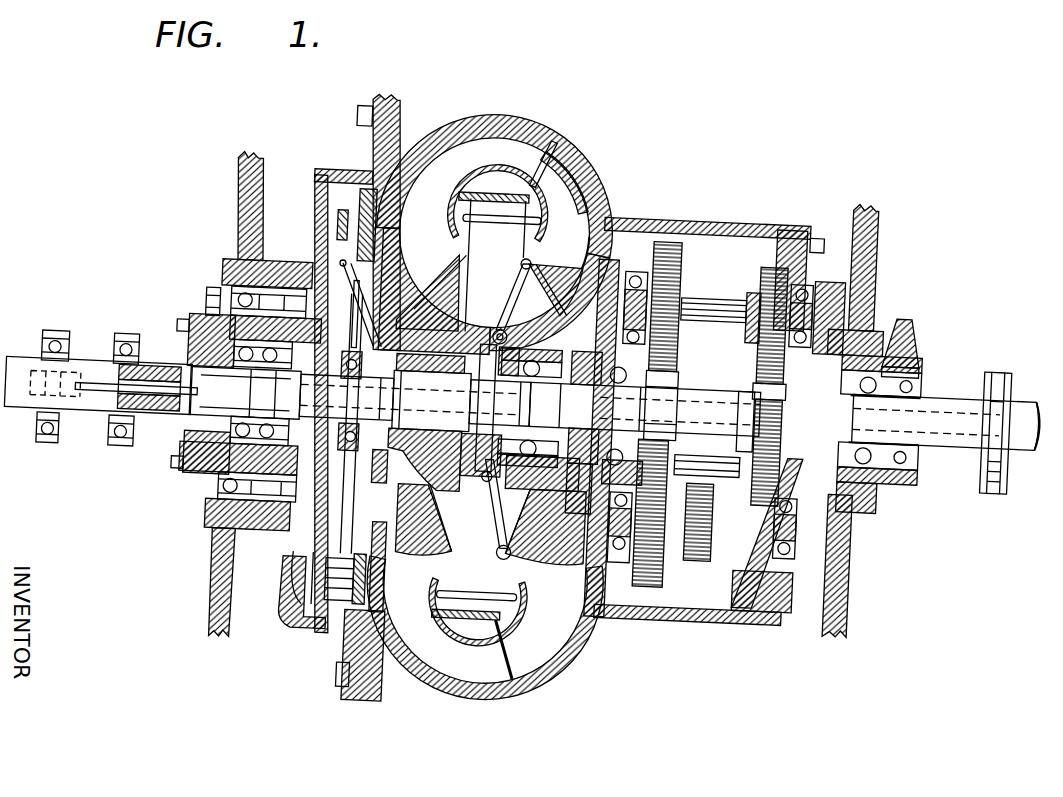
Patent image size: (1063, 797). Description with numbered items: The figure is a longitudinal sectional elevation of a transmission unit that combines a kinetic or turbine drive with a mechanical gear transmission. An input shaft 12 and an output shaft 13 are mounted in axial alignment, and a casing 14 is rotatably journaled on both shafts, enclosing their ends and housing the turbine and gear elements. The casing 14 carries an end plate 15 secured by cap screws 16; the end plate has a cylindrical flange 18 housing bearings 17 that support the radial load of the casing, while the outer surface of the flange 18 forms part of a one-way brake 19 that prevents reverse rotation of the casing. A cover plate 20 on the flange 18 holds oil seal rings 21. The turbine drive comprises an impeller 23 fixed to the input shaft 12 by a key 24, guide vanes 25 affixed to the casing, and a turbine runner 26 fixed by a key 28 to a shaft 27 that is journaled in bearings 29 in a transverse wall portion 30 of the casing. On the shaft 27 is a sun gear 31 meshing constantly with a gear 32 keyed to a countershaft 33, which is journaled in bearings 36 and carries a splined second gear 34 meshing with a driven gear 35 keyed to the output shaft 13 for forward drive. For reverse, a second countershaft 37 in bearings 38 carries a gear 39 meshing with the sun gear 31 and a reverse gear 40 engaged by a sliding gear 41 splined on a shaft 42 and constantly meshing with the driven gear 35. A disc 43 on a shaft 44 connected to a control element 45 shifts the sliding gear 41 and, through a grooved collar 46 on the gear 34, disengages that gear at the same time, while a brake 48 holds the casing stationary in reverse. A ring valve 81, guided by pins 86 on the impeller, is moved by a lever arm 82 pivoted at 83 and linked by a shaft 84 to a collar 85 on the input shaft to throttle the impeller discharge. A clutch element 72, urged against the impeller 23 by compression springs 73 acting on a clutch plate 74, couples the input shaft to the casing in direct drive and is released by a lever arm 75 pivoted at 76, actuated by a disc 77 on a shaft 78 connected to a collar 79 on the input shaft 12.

The input shaft 12 is at (30, 378).
The output shaft 13 is at (1030, 437).
The casing 14 is at (617, 214).
The end plate 15 is at (365, 114).
The cap screws 16 is at (350, 122).
The bearings 17 is at (232, 458).
The cylindrical flange 18 is at (208, 324).
The one-way brake 19 is at (272, 284).
The cover plate 20 is at (200, 324).
The oil seal rings 21 is at (184, 368).
The impeller 23 is at (414, 202).
The key 24 is at (424, 372).
The guide vanes 25 is at (460, 130).
The turbine runner 26 is at (562, 164).
The shaft 27 is at (645, 409).
The key 28 is at (562, 400).
The bearings 29 is at (613, 466).
The transverse wall portion 30 is at (580, 286).
The sun gear 31 is at (677, 372).
The gear 32 is at (665, 235).
The countershaft 33 is at (698, 290).
The second gear 34 is at (760, 218).
The driven gear 35 is at (755, 372).
The bearings 36 is at (635, 268).
The second countershaft 37 is at (520, 538).
The bearings 38 is at (622, 613).
The gear 39 is at (655, 580).
The reverse gear 40 is at (696, 552).
The sliding gear 41 is at (786, 480).
The shaft 42 is at (700, 447).
The disc 43 is at (738, 394).
The shaft 44 is at (948, 392).
The control element 45 is at (1022, 345).
The grooved collar 46 is at (743, 282).
The brake 48 is at (906, 314).
The clutch element 72 is at (338, 638).
The compression springs 73 is at (310, 640).
The clutch plate 74 is at (344, 564).
The lever arm 75 is at (351, 201).
The pivot 76 is at (334, 270).
The disc 77 is at (355, 362).
The shaft 78 is at (152, 428).
The collar 79 is at (112, 364).
The ring valve 81 is at (486, 188).
The lever arm 82 is at (508, 290).
The pivot 83 is at (495, 332).
The shaft 84 is at (86, 410).
The collar 85 is at (42, 462).
The pins 86 is at (478, 224).